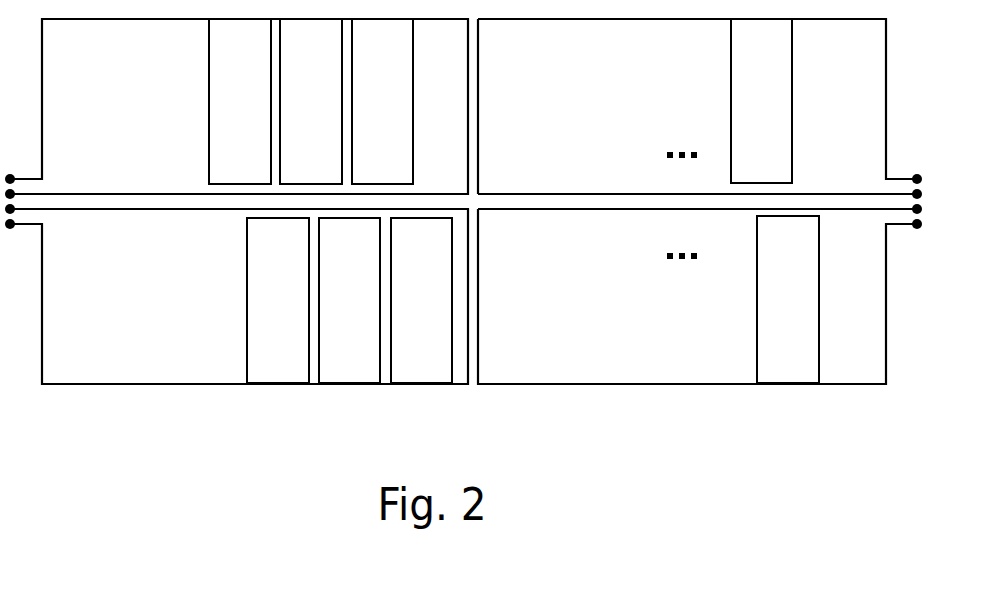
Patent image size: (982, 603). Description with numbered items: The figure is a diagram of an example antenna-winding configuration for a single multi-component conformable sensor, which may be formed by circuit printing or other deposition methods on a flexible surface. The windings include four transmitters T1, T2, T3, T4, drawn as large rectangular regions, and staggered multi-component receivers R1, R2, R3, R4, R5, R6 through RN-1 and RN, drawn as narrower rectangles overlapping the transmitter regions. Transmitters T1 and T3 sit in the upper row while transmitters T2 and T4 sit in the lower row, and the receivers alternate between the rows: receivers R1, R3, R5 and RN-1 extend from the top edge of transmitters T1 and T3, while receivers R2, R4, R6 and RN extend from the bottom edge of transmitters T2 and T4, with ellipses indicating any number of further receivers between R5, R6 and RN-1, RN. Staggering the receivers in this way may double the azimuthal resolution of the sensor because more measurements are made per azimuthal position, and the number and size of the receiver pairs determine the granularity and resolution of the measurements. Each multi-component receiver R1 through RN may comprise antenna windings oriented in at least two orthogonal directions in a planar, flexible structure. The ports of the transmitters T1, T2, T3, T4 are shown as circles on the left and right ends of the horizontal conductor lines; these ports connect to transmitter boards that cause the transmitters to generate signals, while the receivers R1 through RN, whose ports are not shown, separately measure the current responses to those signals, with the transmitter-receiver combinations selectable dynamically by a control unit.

The transmitter T1 is at (255, 106).
The transmitter T2 is at (255, 296).
The transmitter T3 is at (682, 106).
The transmitter T4 is at (682, 296).
The multi-component receiver R1 is at (240, 101).
The multi-component receiver R2 is at (278, 300).
The multi-component receiver R3 is at (311, 101).
The multi-component receiver R4 is at (349, 300).
The multi-component receiver R5 is at (382, 101).
The multi-component receiver R6 is at (421, 300).
The multi-component receiver RN-1 is at (761, 101).
The multi-component receiver RN is at (788, 299).